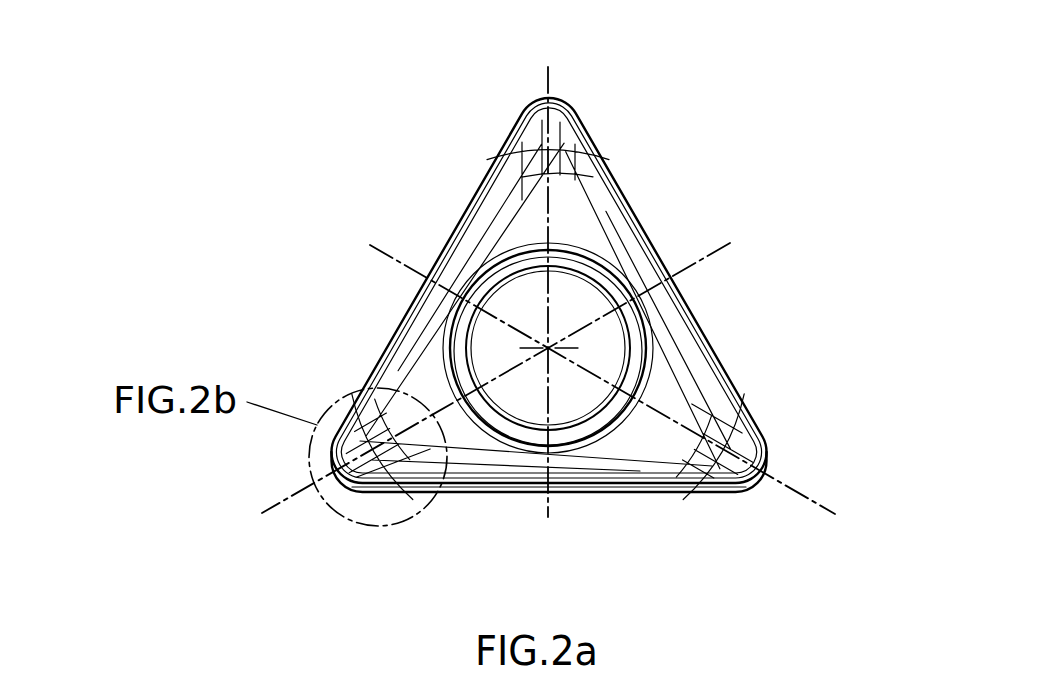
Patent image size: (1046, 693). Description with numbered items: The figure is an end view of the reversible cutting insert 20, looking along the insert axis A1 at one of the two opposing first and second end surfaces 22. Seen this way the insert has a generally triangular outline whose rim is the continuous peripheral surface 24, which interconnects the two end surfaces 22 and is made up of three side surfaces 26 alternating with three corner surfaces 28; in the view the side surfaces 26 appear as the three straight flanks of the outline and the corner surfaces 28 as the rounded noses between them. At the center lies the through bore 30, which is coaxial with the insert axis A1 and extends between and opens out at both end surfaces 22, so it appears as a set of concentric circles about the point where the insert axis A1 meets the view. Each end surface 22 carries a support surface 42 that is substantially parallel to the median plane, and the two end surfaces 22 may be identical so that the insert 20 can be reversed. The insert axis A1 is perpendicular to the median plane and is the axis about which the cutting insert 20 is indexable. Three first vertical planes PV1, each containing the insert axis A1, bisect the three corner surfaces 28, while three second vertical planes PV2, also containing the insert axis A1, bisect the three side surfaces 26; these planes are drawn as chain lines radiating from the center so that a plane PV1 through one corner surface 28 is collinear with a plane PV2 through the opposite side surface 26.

The reversible cutting insert 20 is at (642, 190).
The first and second end surfaces 22 is at (662, 380).
The peripheral surface 24 is at (478, 497).
The side surfaces 26 is at (604, 150).
The corner surfaces 28 is at (530, 100).
The through bore 30 is at (605, 333).
The support surface 42 is at (523, 227).
The insert axis A1 is at (551, 363).
The first vertical plane PV1 is at (544, 290).
The second vertical plane PV2 is at (520, 387).